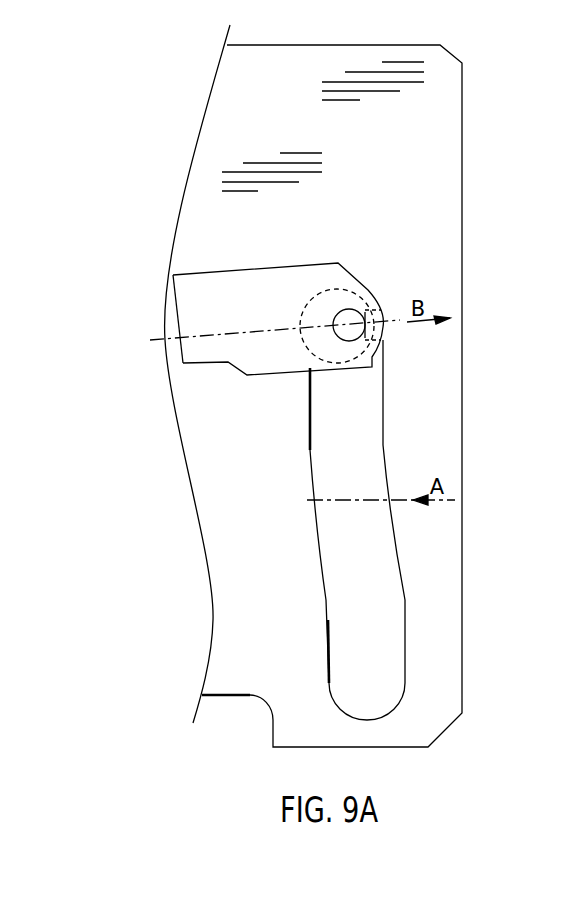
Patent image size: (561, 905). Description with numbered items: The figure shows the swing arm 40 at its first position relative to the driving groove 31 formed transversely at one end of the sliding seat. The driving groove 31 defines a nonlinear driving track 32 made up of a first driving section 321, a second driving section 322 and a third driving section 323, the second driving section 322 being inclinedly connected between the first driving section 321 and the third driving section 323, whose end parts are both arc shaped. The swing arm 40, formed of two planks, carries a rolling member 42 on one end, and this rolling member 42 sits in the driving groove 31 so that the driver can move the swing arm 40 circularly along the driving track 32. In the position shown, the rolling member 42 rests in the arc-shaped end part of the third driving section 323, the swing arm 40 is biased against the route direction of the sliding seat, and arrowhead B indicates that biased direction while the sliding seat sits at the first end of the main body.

The driving groove 31 is at (405, 715).
The driving track 32 is at (235, 530).
The first driving section 321 is at (275, 660).
The second driving section 322 is at (315, 502).
The third driving section 323 is at (310, 402).
The swing arm 40 is at (224, 282).
The rolling member 42 is at (318, 285).